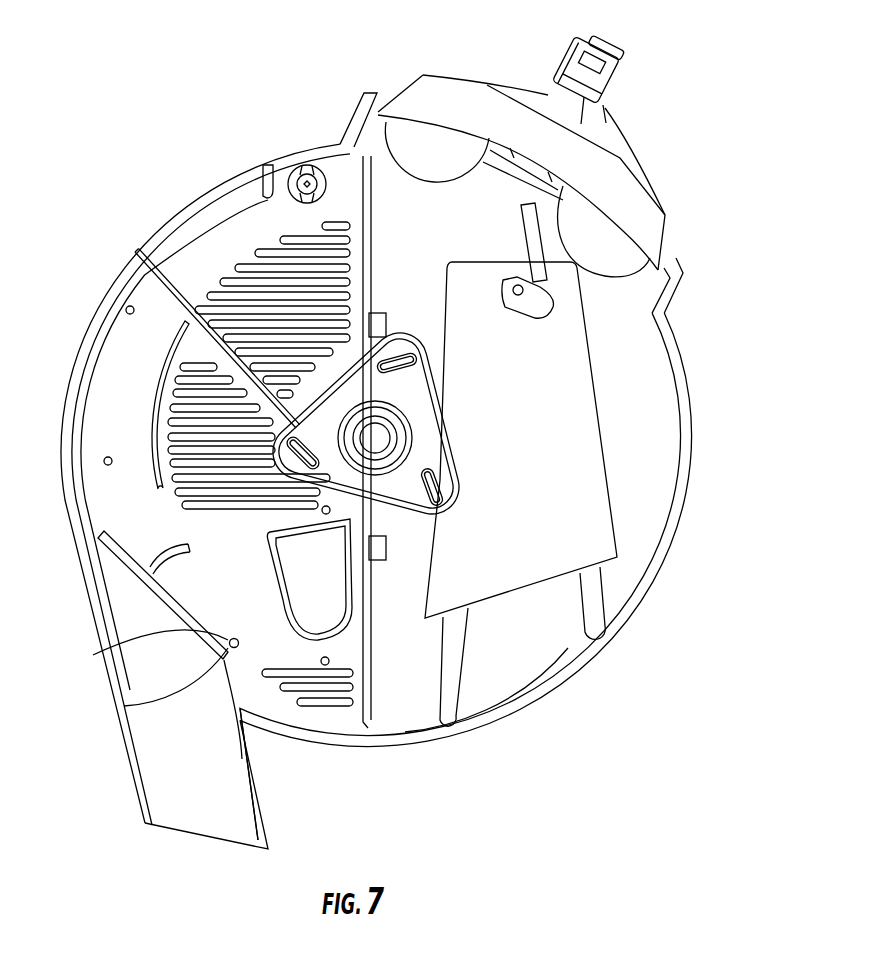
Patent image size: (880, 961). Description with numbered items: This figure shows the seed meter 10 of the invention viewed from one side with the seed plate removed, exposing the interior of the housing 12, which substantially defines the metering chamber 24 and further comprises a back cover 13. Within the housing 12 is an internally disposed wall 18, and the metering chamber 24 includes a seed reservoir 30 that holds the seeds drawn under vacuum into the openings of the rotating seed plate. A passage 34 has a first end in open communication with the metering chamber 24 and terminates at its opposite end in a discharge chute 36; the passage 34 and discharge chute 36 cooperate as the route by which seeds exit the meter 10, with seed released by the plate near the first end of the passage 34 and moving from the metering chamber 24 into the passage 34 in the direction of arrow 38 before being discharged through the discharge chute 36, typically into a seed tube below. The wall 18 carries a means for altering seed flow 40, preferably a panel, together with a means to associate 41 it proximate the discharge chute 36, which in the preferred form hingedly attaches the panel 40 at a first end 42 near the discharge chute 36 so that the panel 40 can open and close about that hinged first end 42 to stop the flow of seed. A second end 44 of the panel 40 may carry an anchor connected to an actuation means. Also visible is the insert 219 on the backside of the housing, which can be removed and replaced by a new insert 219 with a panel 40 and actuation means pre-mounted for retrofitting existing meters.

The seed meter 10 is at (318, 86).
The housing 12 is at (688, 380).
The back cover 13 is at (401, 713).
The wall 18 is at (157, 385).
The metering chamber 24 is at (638, 433).
The seed reservoir 30 is at (543, 633).
The passage 34 is at (138, 337).
The discharge chute 36 is at (190, 820).
The arrow 38 is at (193, 118).
The means for altering seed flow 40 is at (161, 597).
The means to associate 41 is at (93, 655).
The first end 42 is at (124, 706).
The second end 44 is at (118, 560).
The insert 219 is at (275, 230).